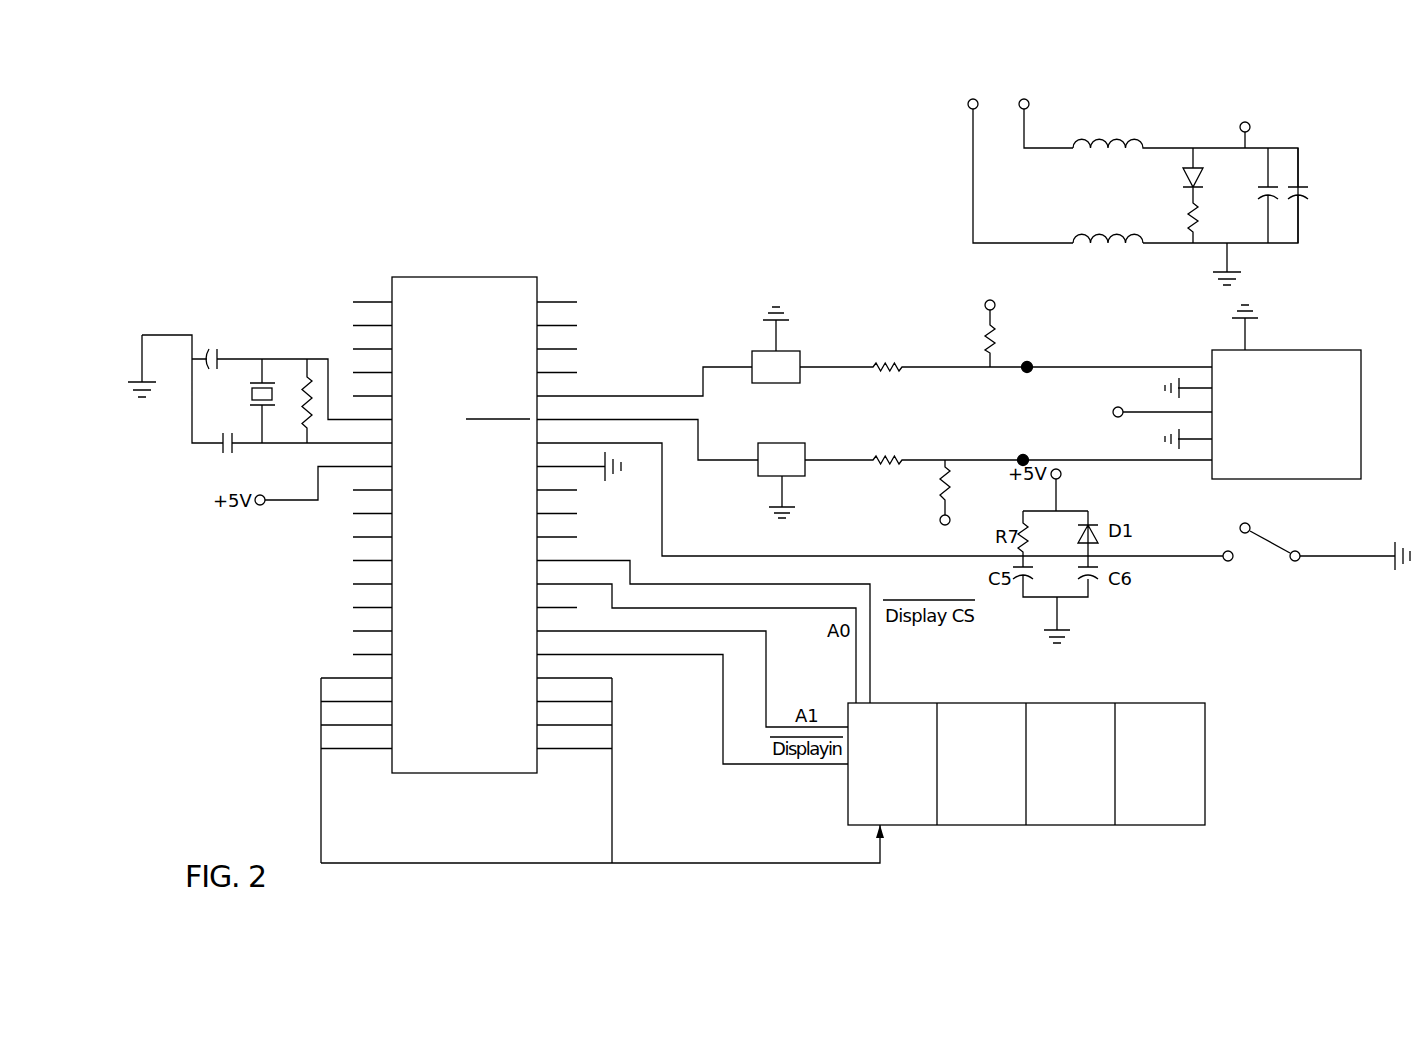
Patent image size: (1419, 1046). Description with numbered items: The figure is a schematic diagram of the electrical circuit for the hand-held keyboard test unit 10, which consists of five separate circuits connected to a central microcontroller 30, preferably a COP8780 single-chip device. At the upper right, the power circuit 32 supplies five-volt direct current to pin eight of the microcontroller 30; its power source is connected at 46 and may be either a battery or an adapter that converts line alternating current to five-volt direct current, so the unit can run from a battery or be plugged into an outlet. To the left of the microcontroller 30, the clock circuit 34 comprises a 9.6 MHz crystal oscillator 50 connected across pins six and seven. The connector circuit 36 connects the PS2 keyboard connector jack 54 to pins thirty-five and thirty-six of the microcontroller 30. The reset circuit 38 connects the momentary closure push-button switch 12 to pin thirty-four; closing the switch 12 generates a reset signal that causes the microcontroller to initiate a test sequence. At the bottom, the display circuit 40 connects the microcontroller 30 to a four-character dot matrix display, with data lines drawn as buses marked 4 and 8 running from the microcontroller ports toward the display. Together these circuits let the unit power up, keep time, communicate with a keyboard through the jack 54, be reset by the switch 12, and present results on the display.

The test unit 10 is at (335, 108).
The switch 12 is at (1282, 540).
The microcontroller 30 is at (485, 277).
The power circuit 32 is at (1318, 110).
The clock circuit 34 is at (263, 297).
The connector circuit 36 is at (703, 290).
The reset circuit 38 is at (1242, 573).
The display circuit 40 is at (1232, 754).
The power source connection 46 is at (958, 104).
The crystal oscillator 50 is at (248, 397).
The PS2 keyboard connector jack 54 is at (1337, 350).
The 4-bit bus 4 is at (308, 812).
The 8-bit bus 8 is at (683, 868).